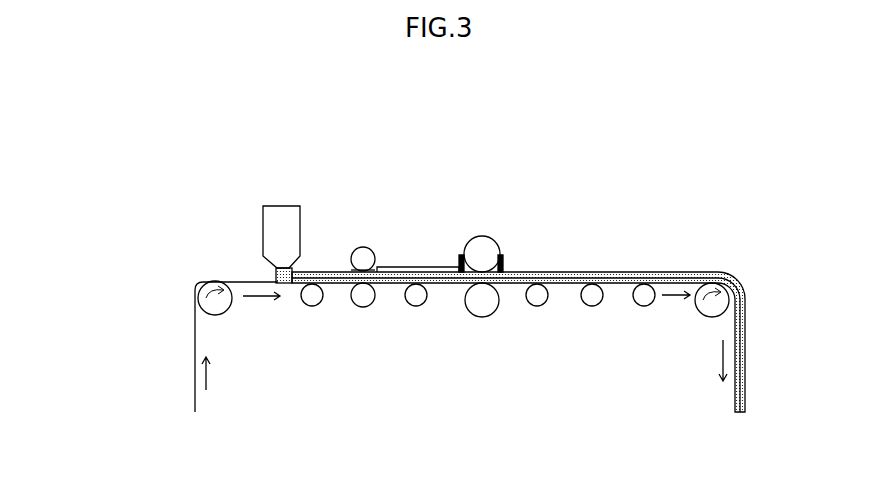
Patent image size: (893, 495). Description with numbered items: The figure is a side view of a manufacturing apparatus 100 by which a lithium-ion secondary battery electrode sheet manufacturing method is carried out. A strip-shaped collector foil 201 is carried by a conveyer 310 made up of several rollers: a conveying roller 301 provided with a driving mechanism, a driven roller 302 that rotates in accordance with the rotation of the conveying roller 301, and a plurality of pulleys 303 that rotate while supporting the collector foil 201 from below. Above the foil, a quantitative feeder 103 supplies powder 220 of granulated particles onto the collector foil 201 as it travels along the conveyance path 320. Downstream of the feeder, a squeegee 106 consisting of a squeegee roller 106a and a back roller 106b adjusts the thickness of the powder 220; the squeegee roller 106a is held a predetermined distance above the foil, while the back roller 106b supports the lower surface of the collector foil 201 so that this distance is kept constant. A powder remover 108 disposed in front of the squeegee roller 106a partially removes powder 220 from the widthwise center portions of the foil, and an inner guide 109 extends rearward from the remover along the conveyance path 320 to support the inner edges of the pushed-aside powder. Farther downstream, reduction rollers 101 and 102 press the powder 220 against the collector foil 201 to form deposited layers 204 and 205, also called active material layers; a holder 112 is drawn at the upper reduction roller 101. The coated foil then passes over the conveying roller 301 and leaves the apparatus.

The manufacturing apparatus 100 is at (661, 202).
The reduction roller 101 is at (482, 237).
The reduction roller 102 is at (482, 318).
The quantitative feeder 103 is at (263, 217).
The squeegee 106 is at (360, 233).
The squeegee roller 106a is at (370, 250).
The back roller 106b is at (362, 308).
The powder remover 108 is at (349, 270).
The inner guide 109 is at (393, 267).
The roller holder 112 is at (503, 258).
The collector foil 201 is at (238, 281).
The deposited layer 204 is at (437, 271).
The deposited layer 205 is at (541, 282).
The powder 220 is at (291, 268).
The conveying roller 301 is at (705, 317).
The driven roller 302 is at (221, 315).
The pulleys 303 is at (312, 307).
The conveyer 310 is at (351, 386).
The conveyance path 320 is at (256, 269).